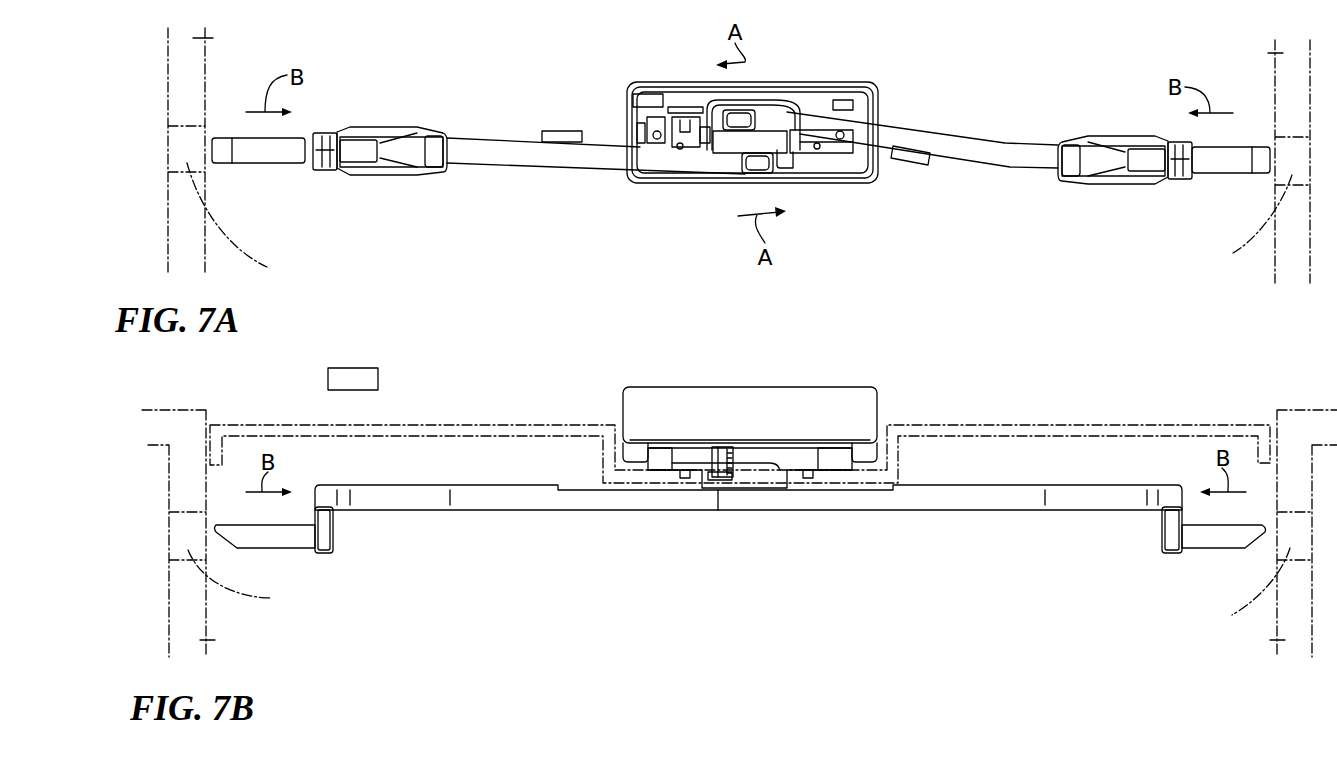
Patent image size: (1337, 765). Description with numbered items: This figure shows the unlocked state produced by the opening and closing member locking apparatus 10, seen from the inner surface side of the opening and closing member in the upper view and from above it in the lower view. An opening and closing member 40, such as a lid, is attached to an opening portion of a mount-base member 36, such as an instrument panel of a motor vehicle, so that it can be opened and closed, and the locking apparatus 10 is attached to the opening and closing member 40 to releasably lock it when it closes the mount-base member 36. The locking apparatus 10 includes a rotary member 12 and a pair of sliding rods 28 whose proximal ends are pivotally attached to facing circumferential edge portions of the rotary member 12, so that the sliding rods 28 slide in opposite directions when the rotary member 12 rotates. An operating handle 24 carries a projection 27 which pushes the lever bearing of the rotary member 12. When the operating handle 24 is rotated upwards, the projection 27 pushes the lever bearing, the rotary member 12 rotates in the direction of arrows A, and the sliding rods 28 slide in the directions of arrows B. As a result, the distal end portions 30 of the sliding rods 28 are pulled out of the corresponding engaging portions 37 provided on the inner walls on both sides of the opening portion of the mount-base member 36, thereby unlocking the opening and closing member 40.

In FIG. 7A, the opening and closing member locking apparatus 10 is at (843, 62).
In FIG. 7B, the opening and closing member locking apparatus 10 is at (828, 353).
In FIG. 7A, the rotary member 12 is at (758, 140).
In FIG. 7B, the rotary member 12 is at (748, 483).
In FIG. 7A, the operating handle 24 is at (655, 82).
In FIG. 7B, the operating handle 24 is at (648, 395).
In FIG. 7B, the projection 27 is at (718, 450).
In FIG. 7A, the sliding rods 28 is at (507, 138).
In FIG. 7B, the sliding rods 28 is at (497, 512).
In FIG. 7A, the distal end portions 30 is at (218, 153).
In FIG. 7B, the distal end portions 30 is at (221, 535).
In FIG. 7A, the mount-base member 36 is at (205, 38).
In FIG. 7B, the mount-base member 36 is at (212, 640).
In FIG. 7A, the engaging portions 37 is at (739, 222).
In FIG. 7B, the engaging portions 37 is at (739, 592).
In FIG. 7B, the opening and closing member 40 is at (407, 425).